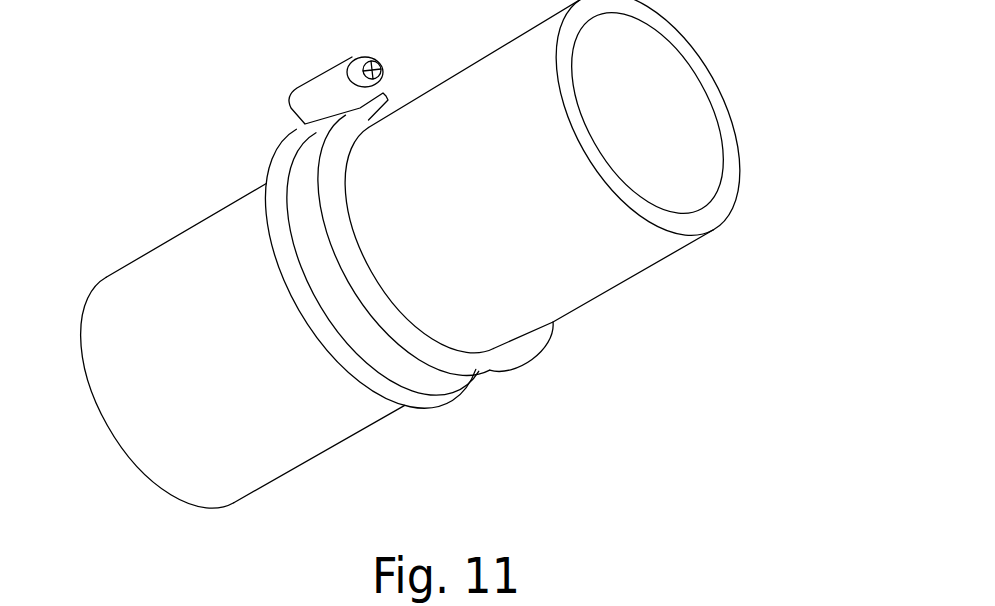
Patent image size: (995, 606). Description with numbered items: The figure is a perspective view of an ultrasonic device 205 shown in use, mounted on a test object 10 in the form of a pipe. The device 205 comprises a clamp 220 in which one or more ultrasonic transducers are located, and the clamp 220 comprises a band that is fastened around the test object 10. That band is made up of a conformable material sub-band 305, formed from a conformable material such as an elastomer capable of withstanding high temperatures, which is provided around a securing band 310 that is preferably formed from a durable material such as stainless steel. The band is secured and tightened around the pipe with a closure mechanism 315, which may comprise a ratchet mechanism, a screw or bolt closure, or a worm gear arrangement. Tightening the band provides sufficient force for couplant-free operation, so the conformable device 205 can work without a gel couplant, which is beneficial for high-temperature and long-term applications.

The test object 10 is at (612, 273).
The ultrasonic device 205 is at (427, 253).
The clamp 220 is at (273, 158).
The conformable material sub-band 305 is at (520, 355).
The securing band 310 is at (427, 385).
The closure mechanism 315 is at (321, 77).